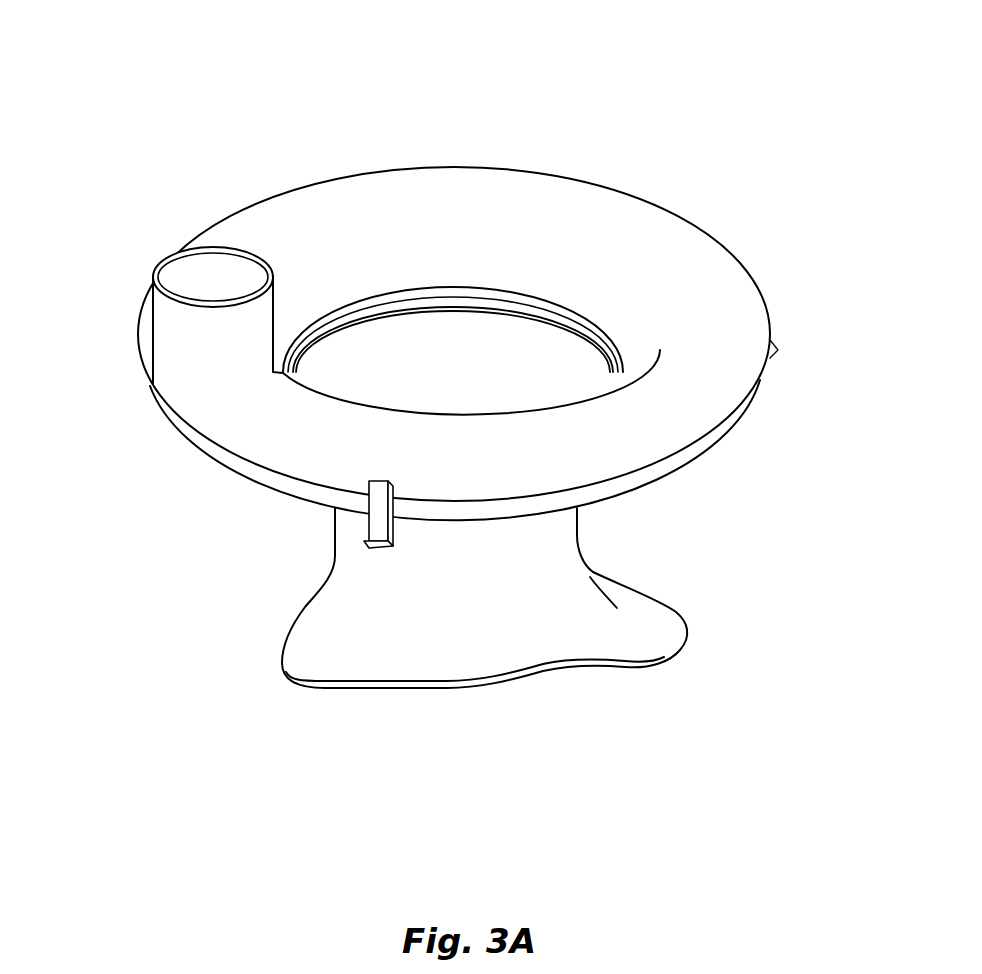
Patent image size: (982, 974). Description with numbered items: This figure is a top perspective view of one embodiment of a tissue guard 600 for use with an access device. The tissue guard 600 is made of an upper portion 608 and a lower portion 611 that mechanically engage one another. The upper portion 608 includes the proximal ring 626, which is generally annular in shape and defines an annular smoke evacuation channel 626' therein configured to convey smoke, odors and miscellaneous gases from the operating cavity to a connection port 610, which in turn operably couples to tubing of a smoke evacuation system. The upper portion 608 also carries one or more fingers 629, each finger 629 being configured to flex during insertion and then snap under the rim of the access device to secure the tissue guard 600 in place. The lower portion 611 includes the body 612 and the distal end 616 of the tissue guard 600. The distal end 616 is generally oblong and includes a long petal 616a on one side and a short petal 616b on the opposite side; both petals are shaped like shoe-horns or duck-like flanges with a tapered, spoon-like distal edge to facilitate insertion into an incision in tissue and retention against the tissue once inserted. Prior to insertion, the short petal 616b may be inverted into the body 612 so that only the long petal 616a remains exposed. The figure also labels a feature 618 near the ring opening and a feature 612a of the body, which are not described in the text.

The tissue guard 600 is at (558, 167).
The upper portion 608 is at (727, 251).
The proximal ring 626 is at (337, 154).
The annular smoke evacuation channel 626' is at (463, 150).
The collar lip 618 is at (532, 358).
The central opening 612a is at (592, 362).
The connection port 610 is at (168, 333).
The finger 629 is at (377, 528).
The body 612 is at (543, 545).
The lower portion 611 is at (593, 572).
The long petal 616a is at (685, 620).
The short petal 616b is at (345, 667).
The distal end 616 is at (637, 648).